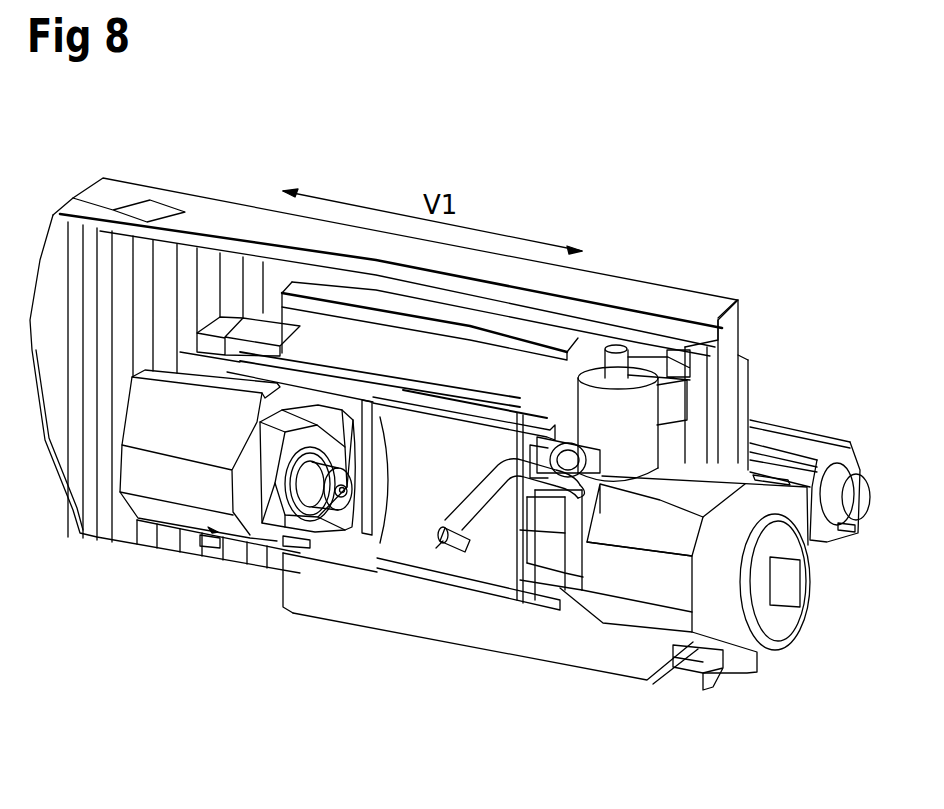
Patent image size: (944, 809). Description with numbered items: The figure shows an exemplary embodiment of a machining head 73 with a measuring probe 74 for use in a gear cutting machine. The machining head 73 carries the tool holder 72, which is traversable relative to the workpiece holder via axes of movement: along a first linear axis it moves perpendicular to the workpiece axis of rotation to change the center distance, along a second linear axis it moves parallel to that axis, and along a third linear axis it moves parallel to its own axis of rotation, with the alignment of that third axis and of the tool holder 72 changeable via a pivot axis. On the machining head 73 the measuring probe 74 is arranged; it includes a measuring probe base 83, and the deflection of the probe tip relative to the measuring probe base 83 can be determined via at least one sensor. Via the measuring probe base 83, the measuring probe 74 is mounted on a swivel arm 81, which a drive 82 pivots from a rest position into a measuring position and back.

The tool holder 72 is at (347, 495).
The machining head 73 is at (492, 683).
The measuring probe 74 is at (443, 543).
The swivel arm 81 is at (490, 480).
The drive 82 is at (640, 446).
The measuring probe base 83 is at (462, 527).